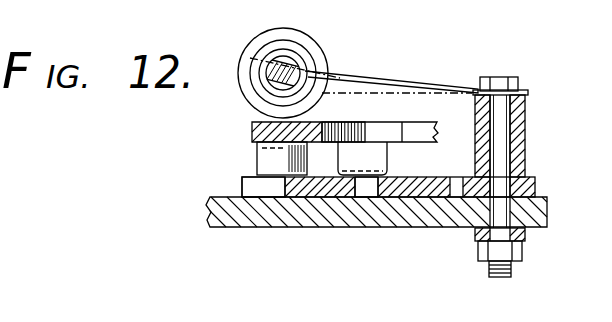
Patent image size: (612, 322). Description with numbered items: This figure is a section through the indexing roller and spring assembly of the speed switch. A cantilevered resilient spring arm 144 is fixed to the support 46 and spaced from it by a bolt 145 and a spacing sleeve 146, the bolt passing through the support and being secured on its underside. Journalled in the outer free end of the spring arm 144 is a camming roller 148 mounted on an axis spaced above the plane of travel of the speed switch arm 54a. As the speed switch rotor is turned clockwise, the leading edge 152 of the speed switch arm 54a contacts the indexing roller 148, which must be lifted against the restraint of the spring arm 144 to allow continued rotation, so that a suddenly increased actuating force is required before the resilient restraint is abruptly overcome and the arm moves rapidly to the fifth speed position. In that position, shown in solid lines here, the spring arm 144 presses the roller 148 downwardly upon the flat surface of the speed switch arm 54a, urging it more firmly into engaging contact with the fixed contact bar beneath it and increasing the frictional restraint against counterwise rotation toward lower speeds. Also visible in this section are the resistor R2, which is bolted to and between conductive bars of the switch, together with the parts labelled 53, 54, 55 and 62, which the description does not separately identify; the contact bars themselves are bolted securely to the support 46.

The support 46 is at (548, 215).
The mounting plate 53 is at (537, 187).
The plate section 54 is at (418, 200).
The plate section 55 is at (311, 197).
The speed switch arm 54a is at (353, 122).
The spacer block 62 is at (264, 158).
The resilient spring arm 144 is at (370, 84).
The bolt 145 is at (526, 111).
The spacing sleeve 146 is at (518, 140).
The camming roller 148 is at (313, 43).
The leading edge 152 is at (319, 115).
The resistor R2 is at (522, 237).